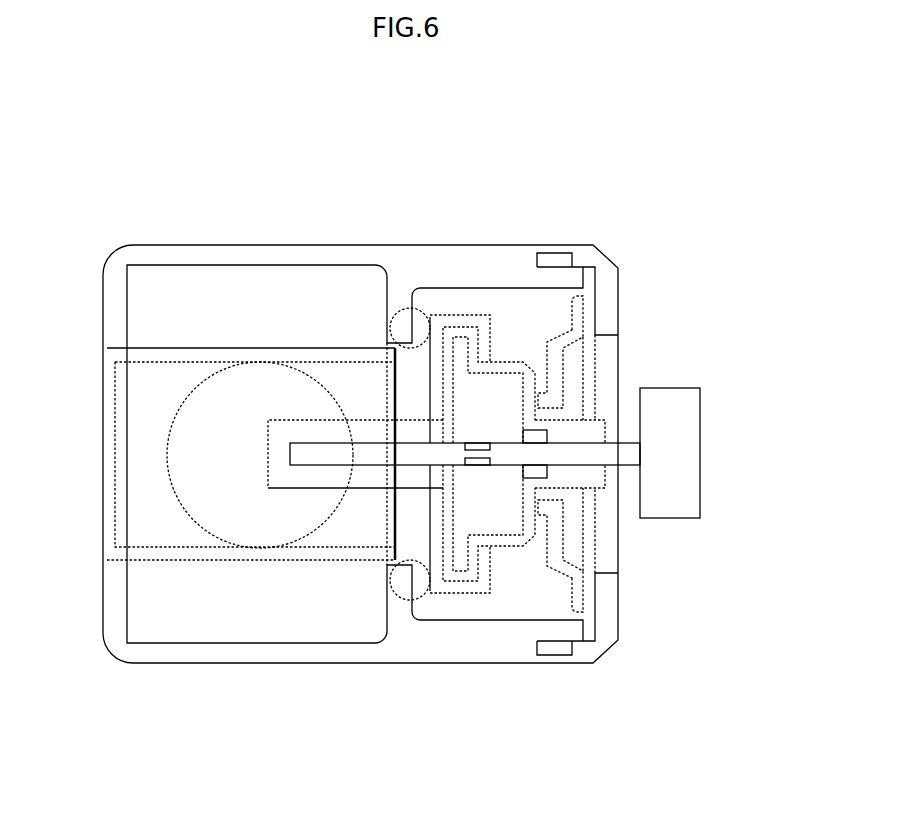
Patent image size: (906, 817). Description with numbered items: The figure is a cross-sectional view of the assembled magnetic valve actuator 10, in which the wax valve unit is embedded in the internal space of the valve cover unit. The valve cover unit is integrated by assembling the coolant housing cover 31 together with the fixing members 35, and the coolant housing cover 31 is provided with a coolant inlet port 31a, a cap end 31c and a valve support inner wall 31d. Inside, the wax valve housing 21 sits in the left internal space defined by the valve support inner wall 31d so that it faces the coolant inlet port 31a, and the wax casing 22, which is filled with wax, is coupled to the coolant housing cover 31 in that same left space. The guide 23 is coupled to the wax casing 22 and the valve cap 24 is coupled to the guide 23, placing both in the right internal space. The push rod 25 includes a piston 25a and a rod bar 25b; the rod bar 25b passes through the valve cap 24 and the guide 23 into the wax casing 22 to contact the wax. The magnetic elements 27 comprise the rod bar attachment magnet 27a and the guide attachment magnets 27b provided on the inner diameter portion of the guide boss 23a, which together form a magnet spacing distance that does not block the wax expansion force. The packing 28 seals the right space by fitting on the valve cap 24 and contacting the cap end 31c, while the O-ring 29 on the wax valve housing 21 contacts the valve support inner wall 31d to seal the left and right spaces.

The valve actuator 10 is at (103, 172).
The wax valve housing 21 is at (160, 353).
The wax casing 22 is at (168, 458).
The guide 23 is at (505, 522).
The guide boss 23a is at (598, 434).
The valve cap 24 is at (567, 557).
The push rod 25 is at (770, 628).
The piston 25a is at (678, 503).
The rod bar 25b is at (630, 463).
The magnetic elements 27 is at (446, 133).
The rod bar attachment magnet 27a is at (540, 438).
The guide attachment magnets 27b is at (478, 443).
The packing 28 is at (590, 630).
The O-ring 29 is at (412, 517).
The coolant housing cover 31 is at (176, 652).
The coolant inlet port 31a is at (250, 385).
The cap end 31c is at (568, 282).
The valve support inner wall 31d is at (386, 584).
The fixing members 35 is at (555, 252).